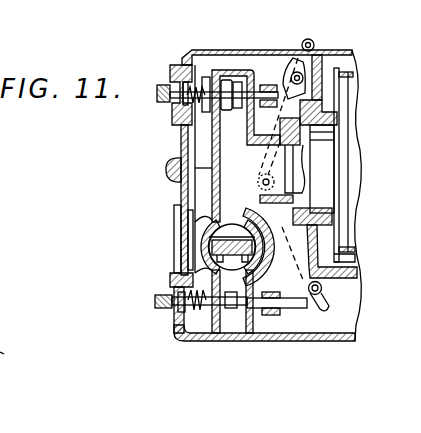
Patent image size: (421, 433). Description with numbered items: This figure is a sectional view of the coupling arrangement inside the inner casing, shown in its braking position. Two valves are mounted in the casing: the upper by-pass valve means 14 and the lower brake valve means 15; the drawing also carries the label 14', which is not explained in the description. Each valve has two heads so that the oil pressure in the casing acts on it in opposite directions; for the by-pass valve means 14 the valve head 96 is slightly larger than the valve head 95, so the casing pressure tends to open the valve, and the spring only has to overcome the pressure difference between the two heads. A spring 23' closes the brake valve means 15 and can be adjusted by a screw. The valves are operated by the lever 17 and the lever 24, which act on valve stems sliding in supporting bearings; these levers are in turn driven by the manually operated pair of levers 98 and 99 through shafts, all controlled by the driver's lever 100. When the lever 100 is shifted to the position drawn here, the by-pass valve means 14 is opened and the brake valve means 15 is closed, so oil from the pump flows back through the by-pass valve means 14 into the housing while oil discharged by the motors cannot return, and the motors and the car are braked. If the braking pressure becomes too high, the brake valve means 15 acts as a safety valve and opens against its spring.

The by-pass valve means 14 is at (263, 183).
The housing flange bracket 14' is at (176, 81).
The brake valve means 15 is at (219, 326).
The lever 17 is at (291, 48).
The spring 23' is at (234, 335).
The lever 24 is at (332, 303).
The valve head 95 is at (245, 320).
The valve head 96 is at (173, 275).
The lever 98 is at (293, 250).
The lever 99 is at (290, 156).
The lever 100 is at (315, 42).